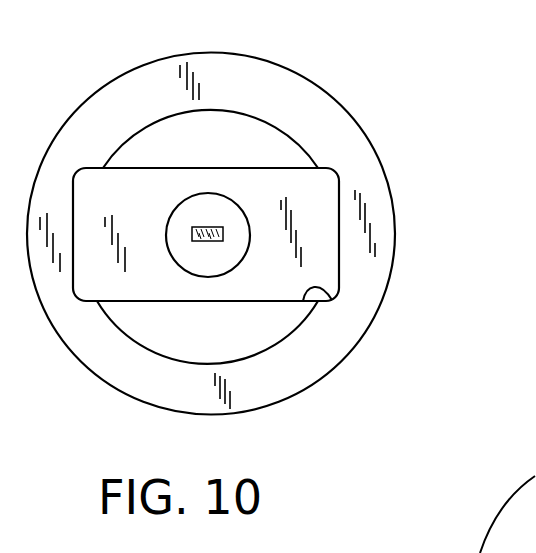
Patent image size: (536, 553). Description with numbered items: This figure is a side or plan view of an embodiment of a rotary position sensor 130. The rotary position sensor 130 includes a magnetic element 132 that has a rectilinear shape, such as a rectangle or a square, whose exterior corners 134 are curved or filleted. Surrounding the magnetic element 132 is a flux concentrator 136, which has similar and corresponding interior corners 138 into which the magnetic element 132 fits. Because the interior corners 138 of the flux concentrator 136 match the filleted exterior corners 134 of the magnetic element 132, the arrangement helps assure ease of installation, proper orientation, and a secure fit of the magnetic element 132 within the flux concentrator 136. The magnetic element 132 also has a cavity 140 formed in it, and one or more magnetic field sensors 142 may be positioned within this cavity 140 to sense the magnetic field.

The rotary position sensor 130 is at (265, 227).
The magnetic element 132 is at (291, 173).
The curved or filleted exterior corners 134 is at (332, 300).
The flux concentrator 136 is at (394, 251).
The interior corners 138 is at (303, 301).
The cavity 140 is at (218, 193).
The magnetic field sensor 142 is at (207, 242).